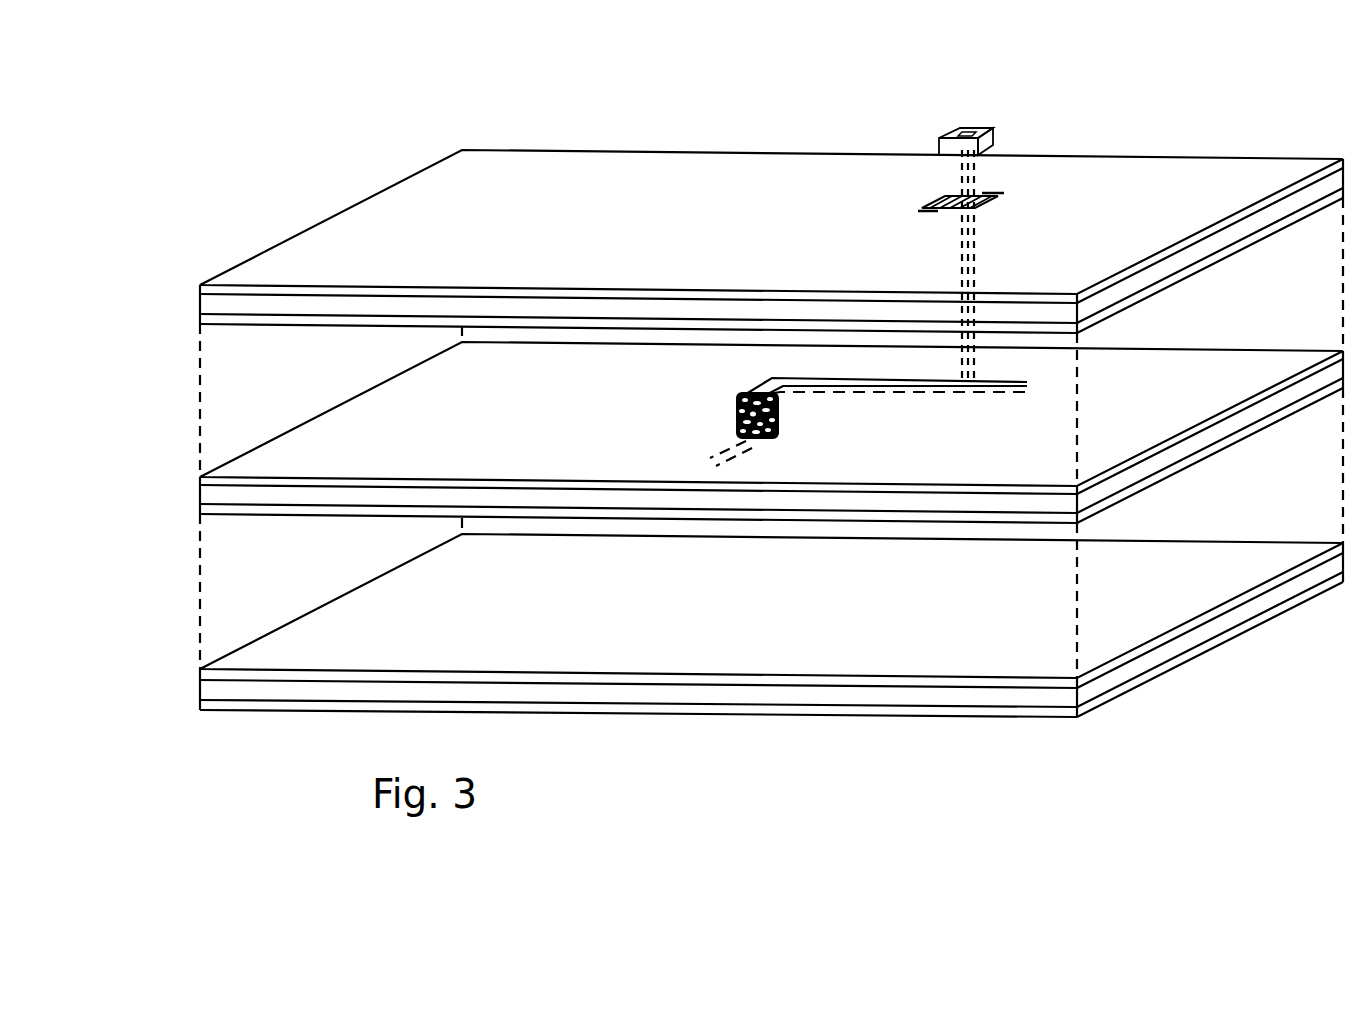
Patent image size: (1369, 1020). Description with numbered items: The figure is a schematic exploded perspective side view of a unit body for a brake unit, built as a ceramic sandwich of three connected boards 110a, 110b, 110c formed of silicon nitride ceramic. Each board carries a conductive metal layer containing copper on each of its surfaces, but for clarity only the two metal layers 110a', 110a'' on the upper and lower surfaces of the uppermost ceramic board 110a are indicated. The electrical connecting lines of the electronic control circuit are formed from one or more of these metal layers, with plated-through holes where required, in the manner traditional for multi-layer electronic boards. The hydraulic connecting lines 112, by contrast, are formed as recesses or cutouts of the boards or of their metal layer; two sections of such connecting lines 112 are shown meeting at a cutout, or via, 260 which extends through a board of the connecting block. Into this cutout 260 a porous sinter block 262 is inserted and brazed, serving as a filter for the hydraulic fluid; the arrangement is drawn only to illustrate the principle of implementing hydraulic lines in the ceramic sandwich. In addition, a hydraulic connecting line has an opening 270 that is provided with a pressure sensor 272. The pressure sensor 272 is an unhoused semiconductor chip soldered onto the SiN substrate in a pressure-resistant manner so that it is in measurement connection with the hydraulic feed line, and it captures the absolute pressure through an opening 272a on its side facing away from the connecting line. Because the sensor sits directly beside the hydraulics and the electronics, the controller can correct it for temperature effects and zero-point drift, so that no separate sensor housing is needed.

The ceramic board 110a is at (704, 246).
The metal layer 110a' is at (689, 222).
The metal layer 110a'' is at (734, 255).
The ceramic board 110b is at (200, 497).
The ceramic board 110c is at (200, 690).
The hydraulic connecting line 112 is at (806, 378).
The cutout (via) 260 is at (772, 442).
The porous sinter block 262 is at (764, 442).
The opening 270 is at (990, 196).
The pressure sensor 272 is at (965, 130).
The opening 272a is at (988, 128).